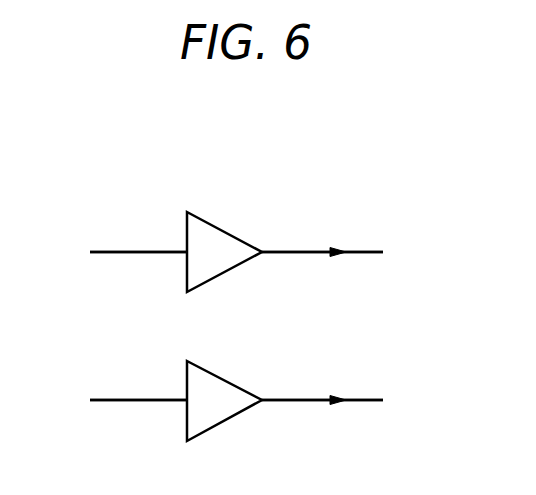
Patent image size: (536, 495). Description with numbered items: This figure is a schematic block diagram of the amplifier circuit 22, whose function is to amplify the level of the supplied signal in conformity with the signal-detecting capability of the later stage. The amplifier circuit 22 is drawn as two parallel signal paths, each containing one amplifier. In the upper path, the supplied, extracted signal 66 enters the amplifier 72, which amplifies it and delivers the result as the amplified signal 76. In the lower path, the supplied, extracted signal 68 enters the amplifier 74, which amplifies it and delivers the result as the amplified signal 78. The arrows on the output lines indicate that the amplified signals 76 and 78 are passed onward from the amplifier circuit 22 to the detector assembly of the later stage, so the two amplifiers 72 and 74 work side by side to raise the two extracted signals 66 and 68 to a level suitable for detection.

The amplifier circuit 22 is at (393, 152).
The extracted signal 66 is at (129, 250).
The extracted signal 68 is at (130, 398).
The amplifier 72 is at (226, 230).
The amplifier 74 is at (227, 378).
The amplified signal 76 is at (305, 250).
The amplified signal 78 is at (306, 398).